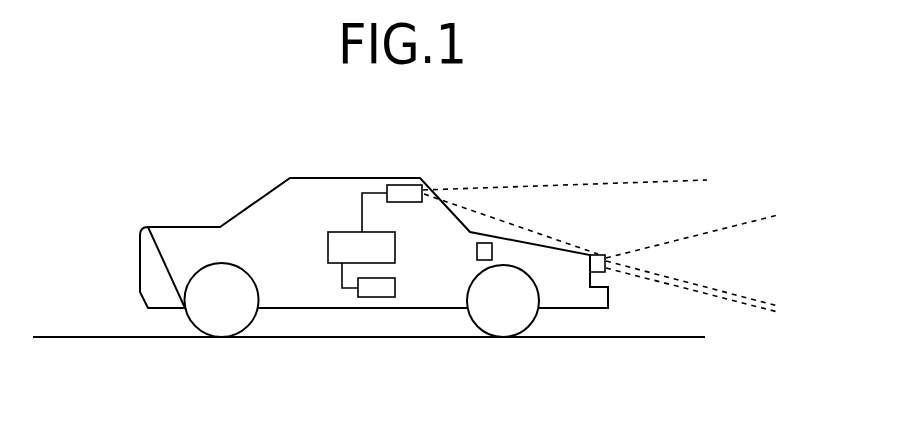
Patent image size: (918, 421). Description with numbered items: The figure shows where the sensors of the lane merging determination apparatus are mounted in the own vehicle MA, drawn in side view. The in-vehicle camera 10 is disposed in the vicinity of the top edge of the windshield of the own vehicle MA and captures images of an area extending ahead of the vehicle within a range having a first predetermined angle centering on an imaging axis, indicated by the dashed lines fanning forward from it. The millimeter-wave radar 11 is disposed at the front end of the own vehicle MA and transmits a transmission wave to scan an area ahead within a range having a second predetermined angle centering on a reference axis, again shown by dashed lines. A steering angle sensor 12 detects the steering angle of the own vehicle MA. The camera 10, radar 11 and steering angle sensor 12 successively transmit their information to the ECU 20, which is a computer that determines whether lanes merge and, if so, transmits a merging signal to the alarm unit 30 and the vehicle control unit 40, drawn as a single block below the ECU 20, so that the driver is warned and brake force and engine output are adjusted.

The own vehicle MA is at (313, 178).
The in-vehicle camera 10 is at (400, 185).
The millimeter-wave radar 11 is at (595, 254).
The steering angle sensor 12 is at (477, 252).
The ECU 20 is at (328, 248).
The alarm unit 30 is at (411, 323).
The vehicle control unit 40 is at (395, 290).